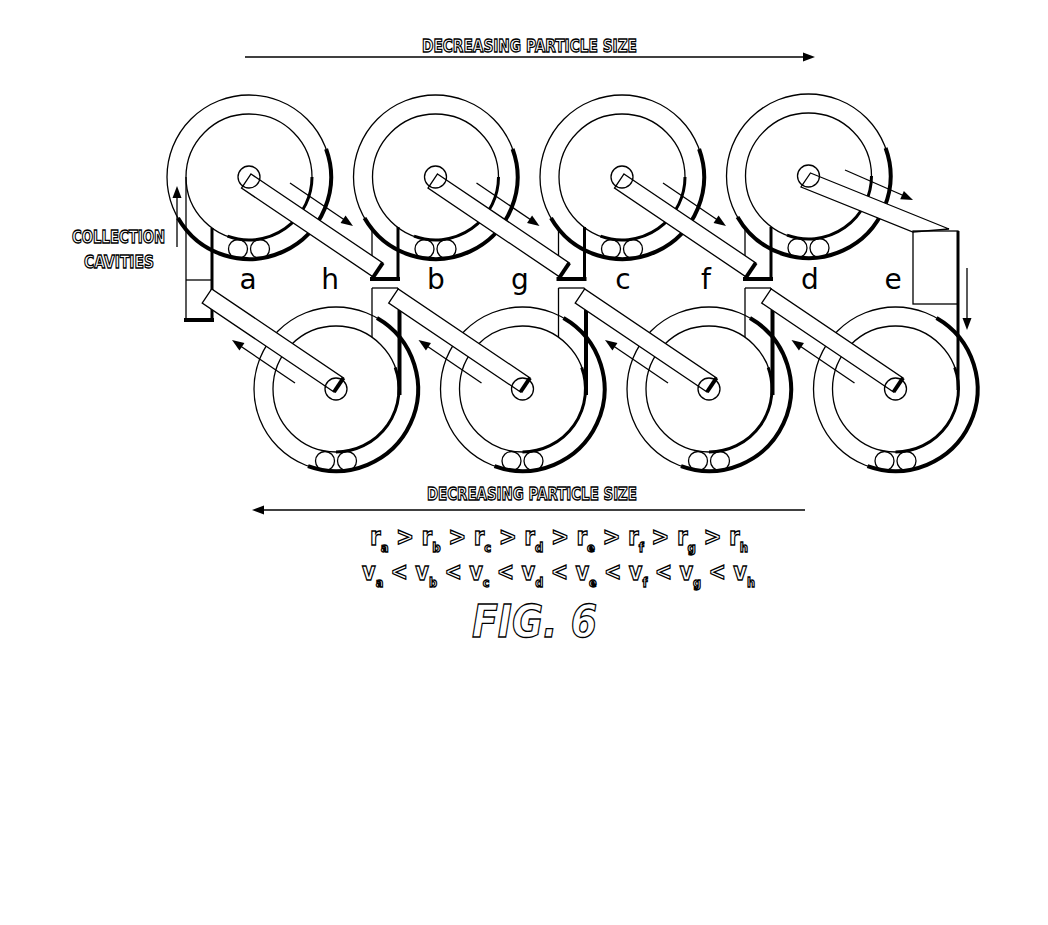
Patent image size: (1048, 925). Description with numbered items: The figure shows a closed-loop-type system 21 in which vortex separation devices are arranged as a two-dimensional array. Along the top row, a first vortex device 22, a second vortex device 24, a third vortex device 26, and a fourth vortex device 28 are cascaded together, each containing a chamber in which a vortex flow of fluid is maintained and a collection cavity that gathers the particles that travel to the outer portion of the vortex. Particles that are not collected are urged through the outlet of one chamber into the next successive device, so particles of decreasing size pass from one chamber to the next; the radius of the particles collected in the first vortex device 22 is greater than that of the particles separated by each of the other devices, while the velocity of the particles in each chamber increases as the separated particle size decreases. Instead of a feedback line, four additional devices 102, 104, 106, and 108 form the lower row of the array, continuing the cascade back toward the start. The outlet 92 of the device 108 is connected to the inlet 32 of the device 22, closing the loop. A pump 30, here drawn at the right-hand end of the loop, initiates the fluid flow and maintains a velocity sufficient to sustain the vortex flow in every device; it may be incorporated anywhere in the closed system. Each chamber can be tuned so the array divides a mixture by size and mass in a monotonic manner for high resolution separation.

The closed-loop-type system 21 is at (928, 170).
The first vortex device 22 is at (283, 102).
The second vortex device 24 is at (470, 102).
The third vortex device 26 is at (657, 102).
The fourth vortex device 28 is at (842, 102).
The pump 30 is at (960, 247).
The inlet 32 is at (186, 286).
The outlet 92 is at (226, 325).
The additional vortex device 102 is at (960, 449).
The additional vortex device 104 is at (777, 449).
The additional vortex device 106 is at (587, 449).
The additional vortex device 108 is at (324, 382).